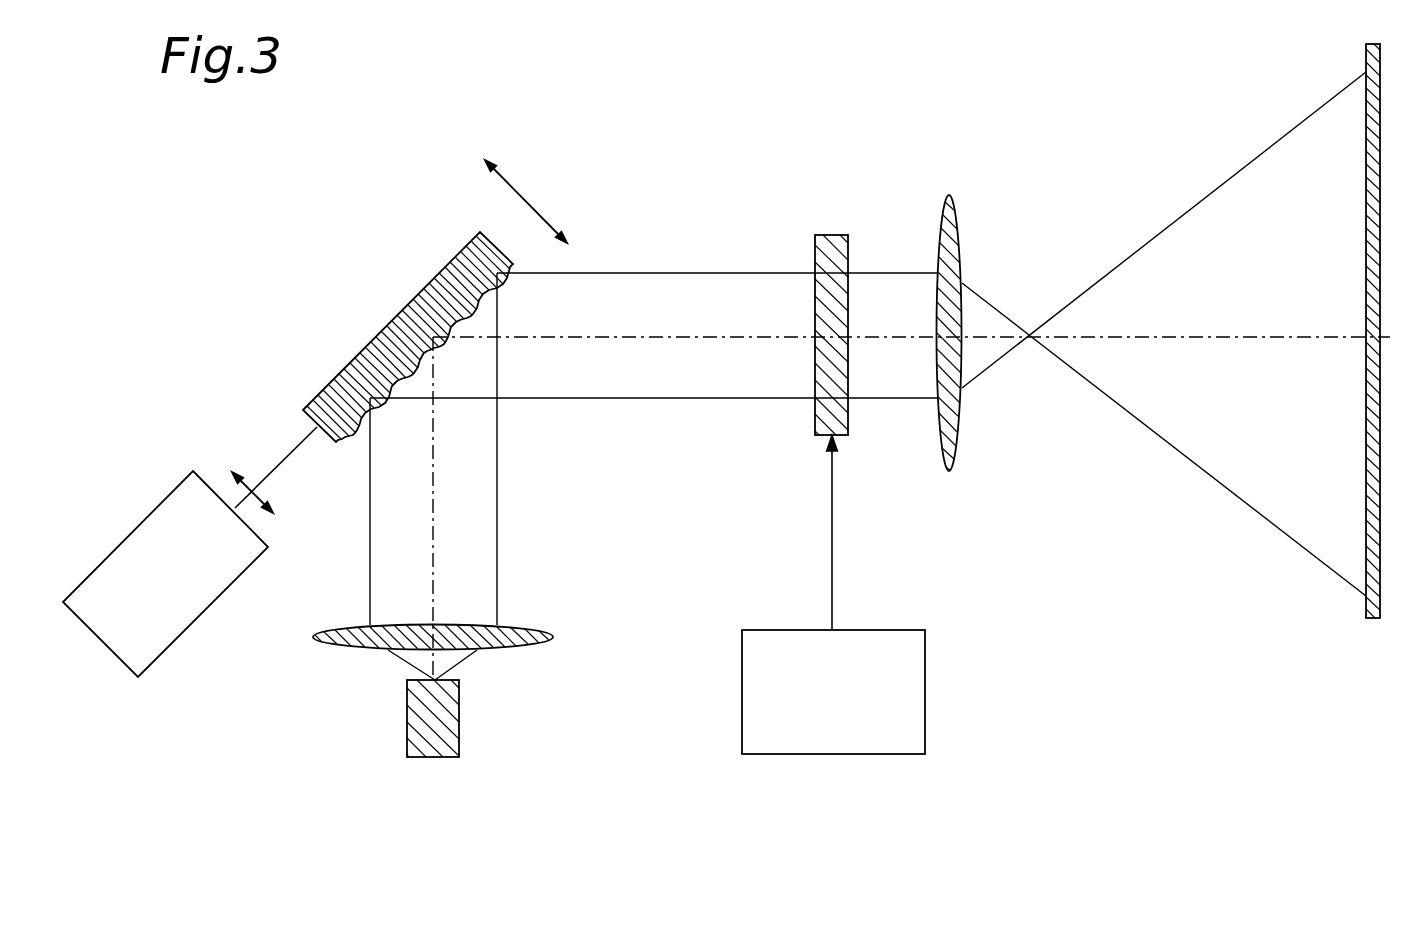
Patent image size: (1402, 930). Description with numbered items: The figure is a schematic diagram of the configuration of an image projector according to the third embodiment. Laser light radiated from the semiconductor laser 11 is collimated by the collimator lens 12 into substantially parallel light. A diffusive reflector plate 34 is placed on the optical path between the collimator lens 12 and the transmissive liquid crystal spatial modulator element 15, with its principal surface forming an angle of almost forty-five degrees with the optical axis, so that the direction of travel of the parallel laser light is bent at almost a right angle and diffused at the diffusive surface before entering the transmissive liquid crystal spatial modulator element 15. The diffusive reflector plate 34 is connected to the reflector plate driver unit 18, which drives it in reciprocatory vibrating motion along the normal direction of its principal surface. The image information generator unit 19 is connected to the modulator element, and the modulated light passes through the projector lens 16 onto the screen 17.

The semiconductor laser 11 is at (455, 716).
The collimator lens 12 is at (545, 640).
The transmissive liquid crystal spatial modulator element 15 is at (830, 235).
The projector lens 16 is at (958, 228).
The screen 17 is at (1366, 157).
The reflector plate driver unit 18 is at (165, 656).
The image information generator unit 19 is at (873, 630).
The diffusive reflector plate 34 is at (331, 440).